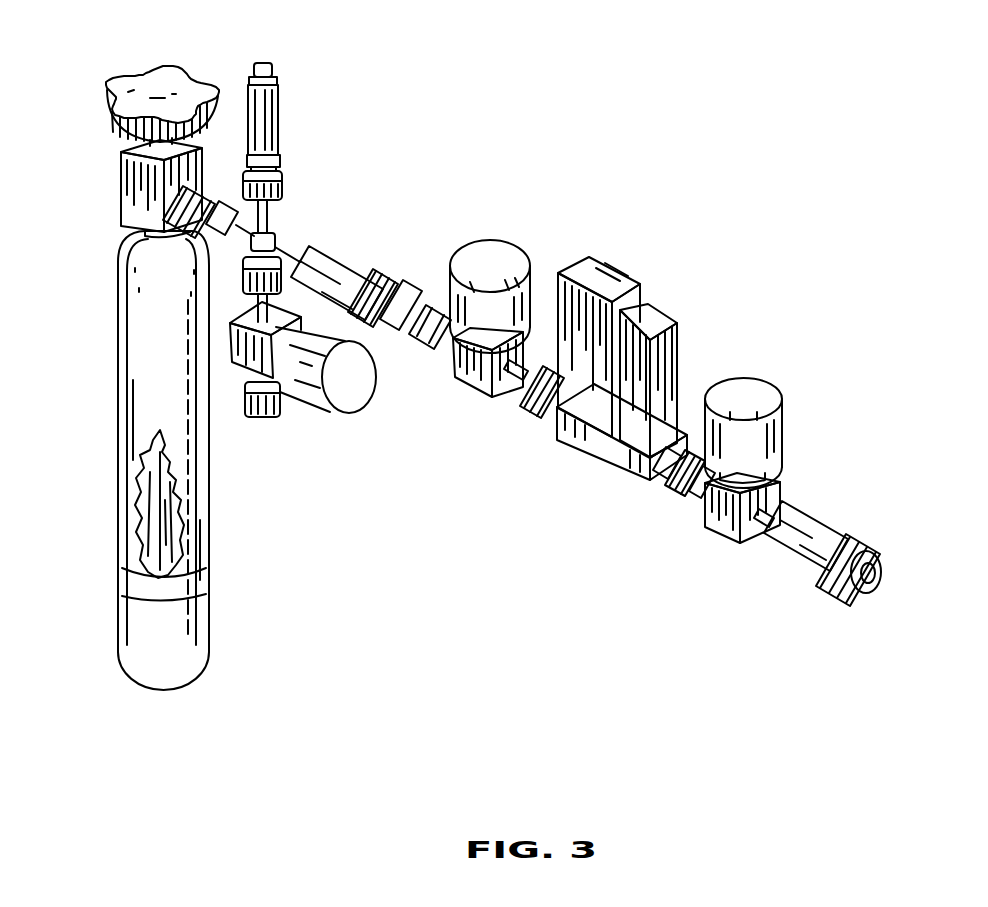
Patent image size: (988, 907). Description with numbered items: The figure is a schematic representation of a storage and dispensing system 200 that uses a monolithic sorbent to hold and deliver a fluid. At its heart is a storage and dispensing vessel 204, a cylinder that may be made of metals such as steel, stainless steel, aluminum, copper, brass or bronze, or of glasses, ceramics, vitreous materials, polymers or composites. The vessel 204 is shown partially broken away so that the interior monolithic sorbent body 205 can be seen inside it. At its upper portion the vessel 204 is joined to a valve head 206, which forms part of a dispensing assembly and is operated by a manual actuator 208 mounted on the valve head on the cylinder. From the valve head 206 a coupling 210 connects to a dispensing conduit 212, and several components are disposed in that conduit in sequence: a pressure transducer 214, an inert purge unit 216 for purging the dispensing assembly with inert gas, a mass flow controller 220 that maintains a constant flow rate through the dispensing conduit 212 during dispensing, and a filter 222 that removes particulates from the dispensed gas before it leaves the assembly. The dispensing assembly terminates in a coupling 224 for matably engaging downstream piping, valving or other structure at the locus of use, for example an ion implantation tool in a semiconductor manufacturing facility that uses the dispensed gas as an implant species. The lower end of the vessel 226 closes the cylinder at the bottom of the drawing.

The sample preparation system 200 is at (438, 102).
The gas cylinder 204 is at (118, 402).
The catalytic element / contents 205 is at (178, 520).
The cylinder valve body 206 is at (118, 177).
The valve handwheel 208 is at (175, 76).
The cylinder neck fitting 210 is at (150, 236).
The tubing / conduit 212 is at (288, 244).
The pressure gauge / inlet tube 214 is at (283, 125).
The pressure gauge 216 is at (348, 388).
The flow controller block 220 is at (605, 274).
The regulator valve 222 is at (780, 432).
The outlet fitting 224 is at (832, 600).
The cylinder bottom 226 is at (152, 668).